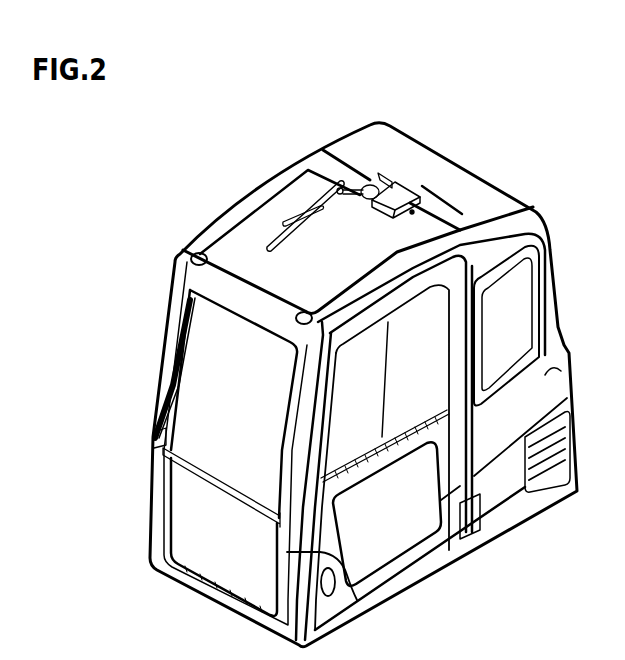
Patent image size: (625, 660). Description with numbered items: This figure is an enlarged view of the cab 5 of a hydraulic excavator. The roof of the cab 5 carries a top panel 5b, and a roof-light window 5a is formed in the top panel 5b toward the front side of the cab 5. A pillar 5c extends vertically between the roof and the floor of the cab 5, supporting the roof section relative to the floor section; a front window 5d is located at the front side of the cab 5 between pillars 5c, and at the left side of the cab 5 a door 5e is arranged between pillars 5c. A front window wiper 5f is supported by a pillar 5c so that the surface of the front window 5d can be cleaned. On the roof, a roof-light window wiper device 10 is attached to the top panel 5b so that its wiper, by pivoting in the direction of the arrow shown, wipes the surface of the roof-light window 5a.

The cab 5 is at (462, 149).
The roof-light window 5a is at (262, 225).
The top panel 5b is at (333, 167).
The pillar 5c is at (293, 473).
The front window 5d is at (223, 449).
The door 5e is at (380, 462).
The front window wiper 5f is at (154, 412).
The roof-light window wiper device 10 is at (400, 193).